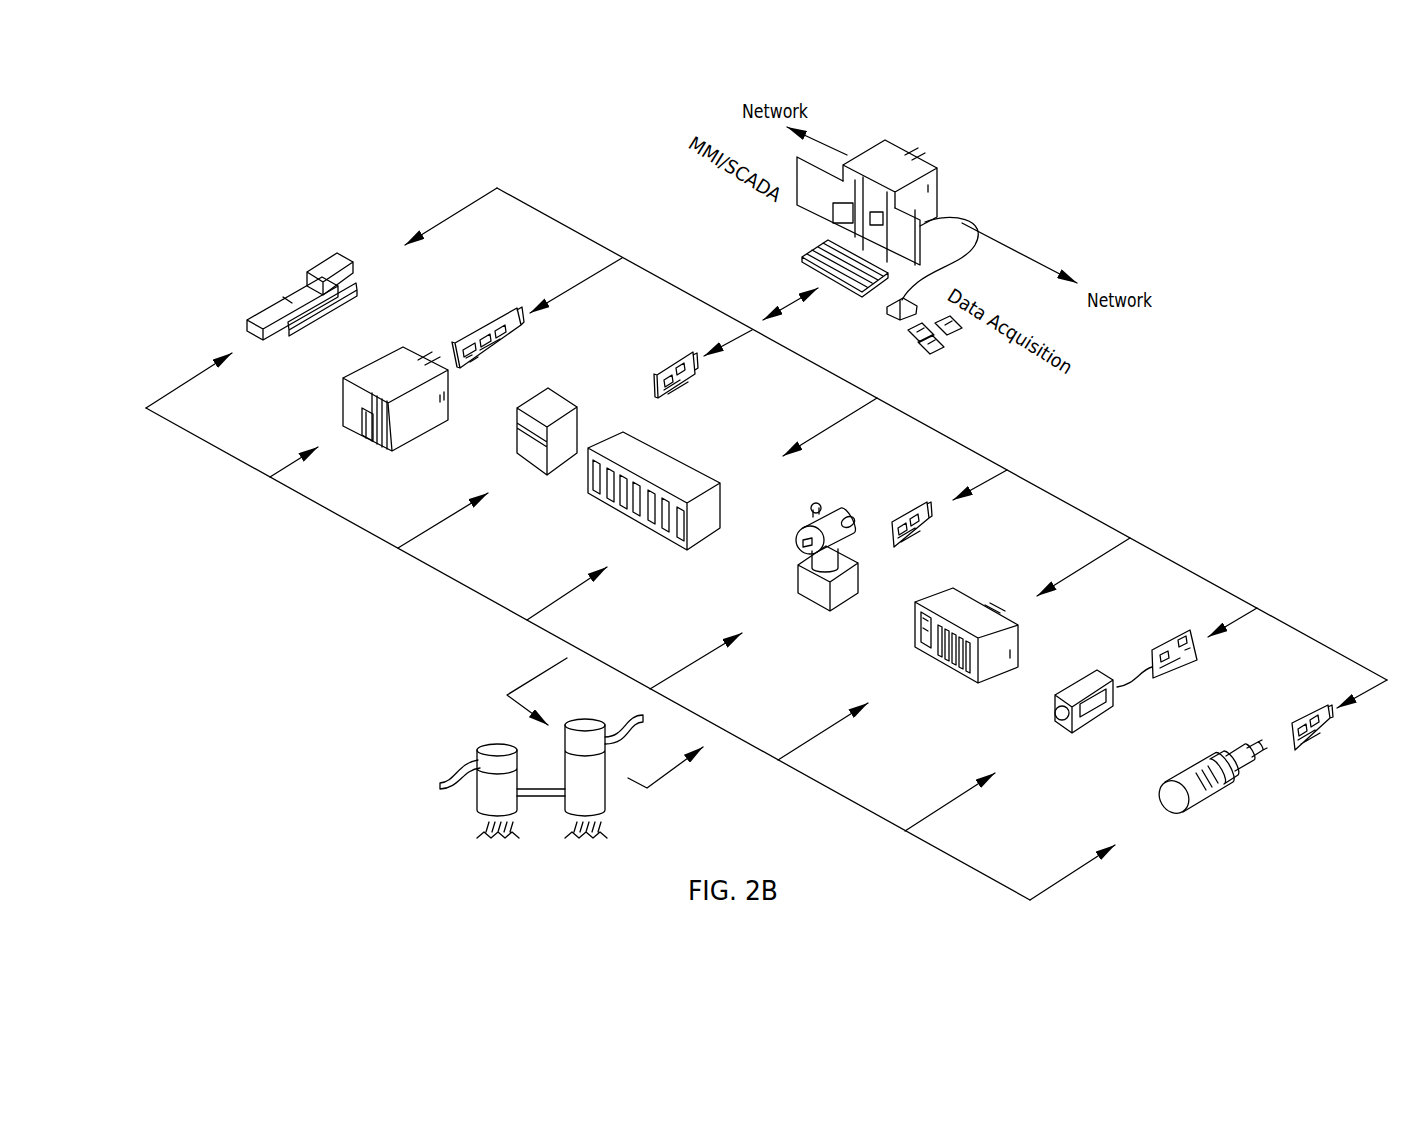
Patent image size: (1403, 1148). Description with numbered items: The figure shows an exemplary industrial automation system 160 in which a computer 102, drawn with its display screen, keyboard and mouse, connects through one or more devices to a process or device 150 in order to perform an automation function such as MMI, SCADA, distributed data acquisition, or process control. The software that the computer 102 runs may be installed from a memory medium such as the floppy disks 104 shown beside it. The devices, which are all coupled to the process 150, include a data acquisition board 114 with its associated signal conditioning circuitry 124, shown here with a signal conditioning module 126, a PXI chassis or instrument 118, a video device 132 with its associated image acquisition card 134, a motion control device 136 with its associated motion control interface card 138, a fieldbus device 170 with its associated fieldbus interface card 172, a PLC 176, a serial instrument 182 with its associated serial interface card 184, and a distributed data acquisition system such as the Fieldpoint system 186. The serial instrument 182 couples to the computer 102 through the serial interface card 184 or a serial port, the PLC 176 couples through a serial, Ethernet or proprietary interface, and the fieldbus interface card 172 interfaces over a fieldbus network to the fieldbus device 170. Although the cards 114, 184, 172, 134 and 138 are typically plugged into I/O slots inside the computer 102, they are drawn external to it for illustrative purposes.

The computer 102 is at (907, 214).
The floppy disks 104 is at (978, 371).
The data acquisition (DAQ) board 114 is at (410, 241).
The PXI chassis or instrument 118 is at (966, 604).
The signal conditioning circuitry 124 is at (332, 417).
The signal conditioning module 126 is at (370, 430).
The video device 132 is at (1069, 744).
The image acquisition card 134 is at (1168, 642).
The motion control device 136 is at (1260, 803).
The motion control interface card 138 is at (1310, 742).
The process or device 150 is at (485, 776).
The industrial automation system 160 is at (1247, 220).
The fieldbus device 170 is at (842, 598).
The fieldbus interface card 172 is at (877, 498).
The PLC (Programmable Logic Controller) 176 is at (663, 478).
The serial instrument 182 is at (525, 450).
The serial interface card 184 is at (643, 361).
The Fieldpoint system 186 is at (283, 271).